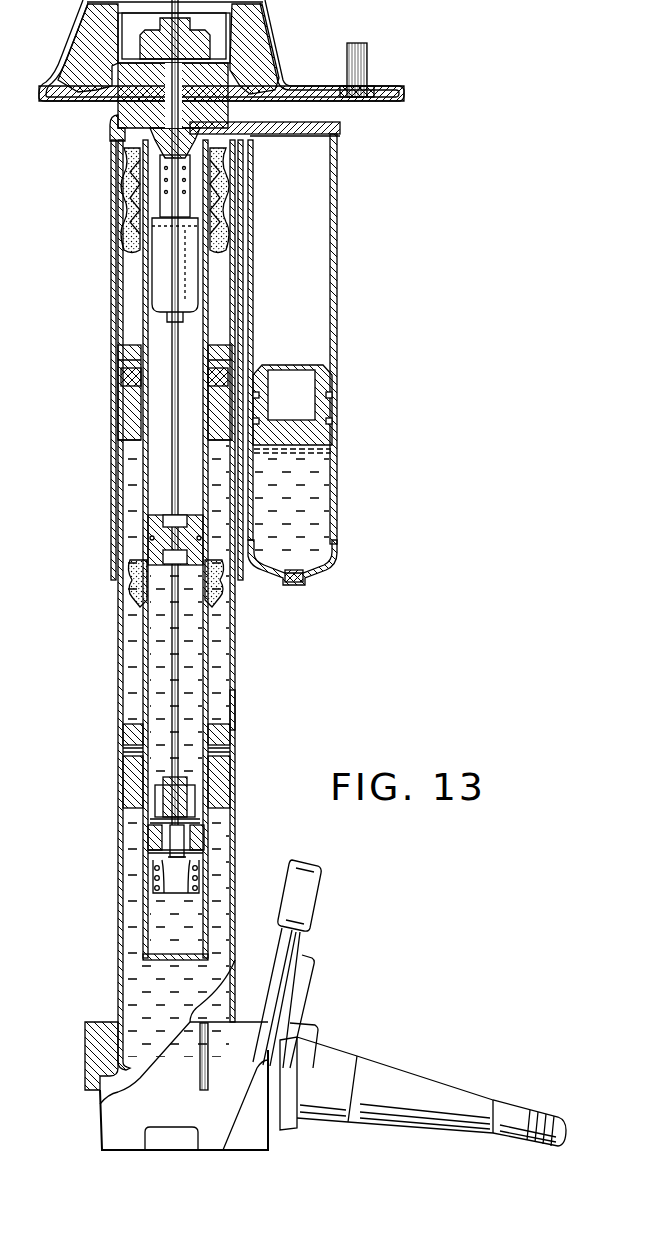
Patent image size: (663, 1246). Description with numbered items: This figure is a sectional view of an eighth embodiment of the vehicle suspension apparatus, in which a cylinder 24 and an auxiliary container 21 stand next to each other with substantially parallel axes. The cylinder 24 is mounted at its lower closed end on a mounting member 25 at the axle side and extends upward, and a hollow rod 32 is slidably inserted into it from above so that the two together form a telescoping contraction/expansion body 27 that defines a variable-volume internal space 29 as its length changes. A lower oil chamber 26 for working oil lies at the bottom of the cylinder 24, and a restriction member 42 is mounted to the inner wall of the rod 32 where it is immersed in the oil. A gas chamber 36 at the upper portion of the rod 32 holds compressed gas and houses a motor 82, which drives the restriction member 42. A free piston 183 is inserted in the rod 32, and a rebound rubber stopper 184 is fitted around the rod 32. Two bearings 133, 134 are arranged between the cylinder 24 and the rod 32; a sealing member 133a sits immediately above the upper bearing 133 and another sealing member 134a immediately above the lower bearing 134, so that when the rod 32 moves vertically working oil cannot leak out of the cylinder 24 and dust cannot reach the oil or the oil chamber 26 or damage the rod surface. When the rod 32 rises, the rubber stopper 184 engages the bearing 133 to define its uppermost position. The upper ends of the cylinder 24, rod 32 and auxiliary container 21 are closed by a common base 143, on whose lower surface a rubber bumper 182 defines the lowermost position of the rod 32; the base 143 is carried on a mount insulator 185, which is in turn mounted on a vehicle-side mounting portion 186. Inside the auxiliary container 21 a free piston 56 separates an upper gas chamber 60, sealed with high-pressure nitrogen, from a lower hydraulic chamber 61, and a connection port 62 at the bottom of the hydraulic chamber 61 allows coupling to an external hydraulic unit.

The mount insulator 185 is at (264, 30).
The mounting portion 186 is at (278, 66).
The common base 143 is at (127, 127).
The rubber bumper 182 is at (122, 218).
The gas chamber 60 is at (320, 238).
The auxiliary container 21 is at (346, 286).
The motor 82 is at (162, 284).
The gas chamber 36 is at (121, 325).
The sealing member 133a is at (125, 383).
The upper bearing 133 is at (126, 434).
The free piston 56 is at (323, 393).
The internal space 29 is at (157, 467).
The hydraulic chamber 61 is at (322, 468).
The free piston 183 is at (150, 548).
The rebound rubber stopper 184 is at (137, 620).
The connection port 62 is at (293, 576).
The cylinder 24 is at (120, 635).
The hollow rod 32 is at (210, 642).
The contraction/expansion body 27 is at (243, 706).
The sealing member 134a is at (125, 742).
The lower bearing 134 is at (126, 782).
The restriction member 42 is at (144, 856).
The oil chamber 26 is at (157, 932).
The mounting member 25 is at (420, 1084).